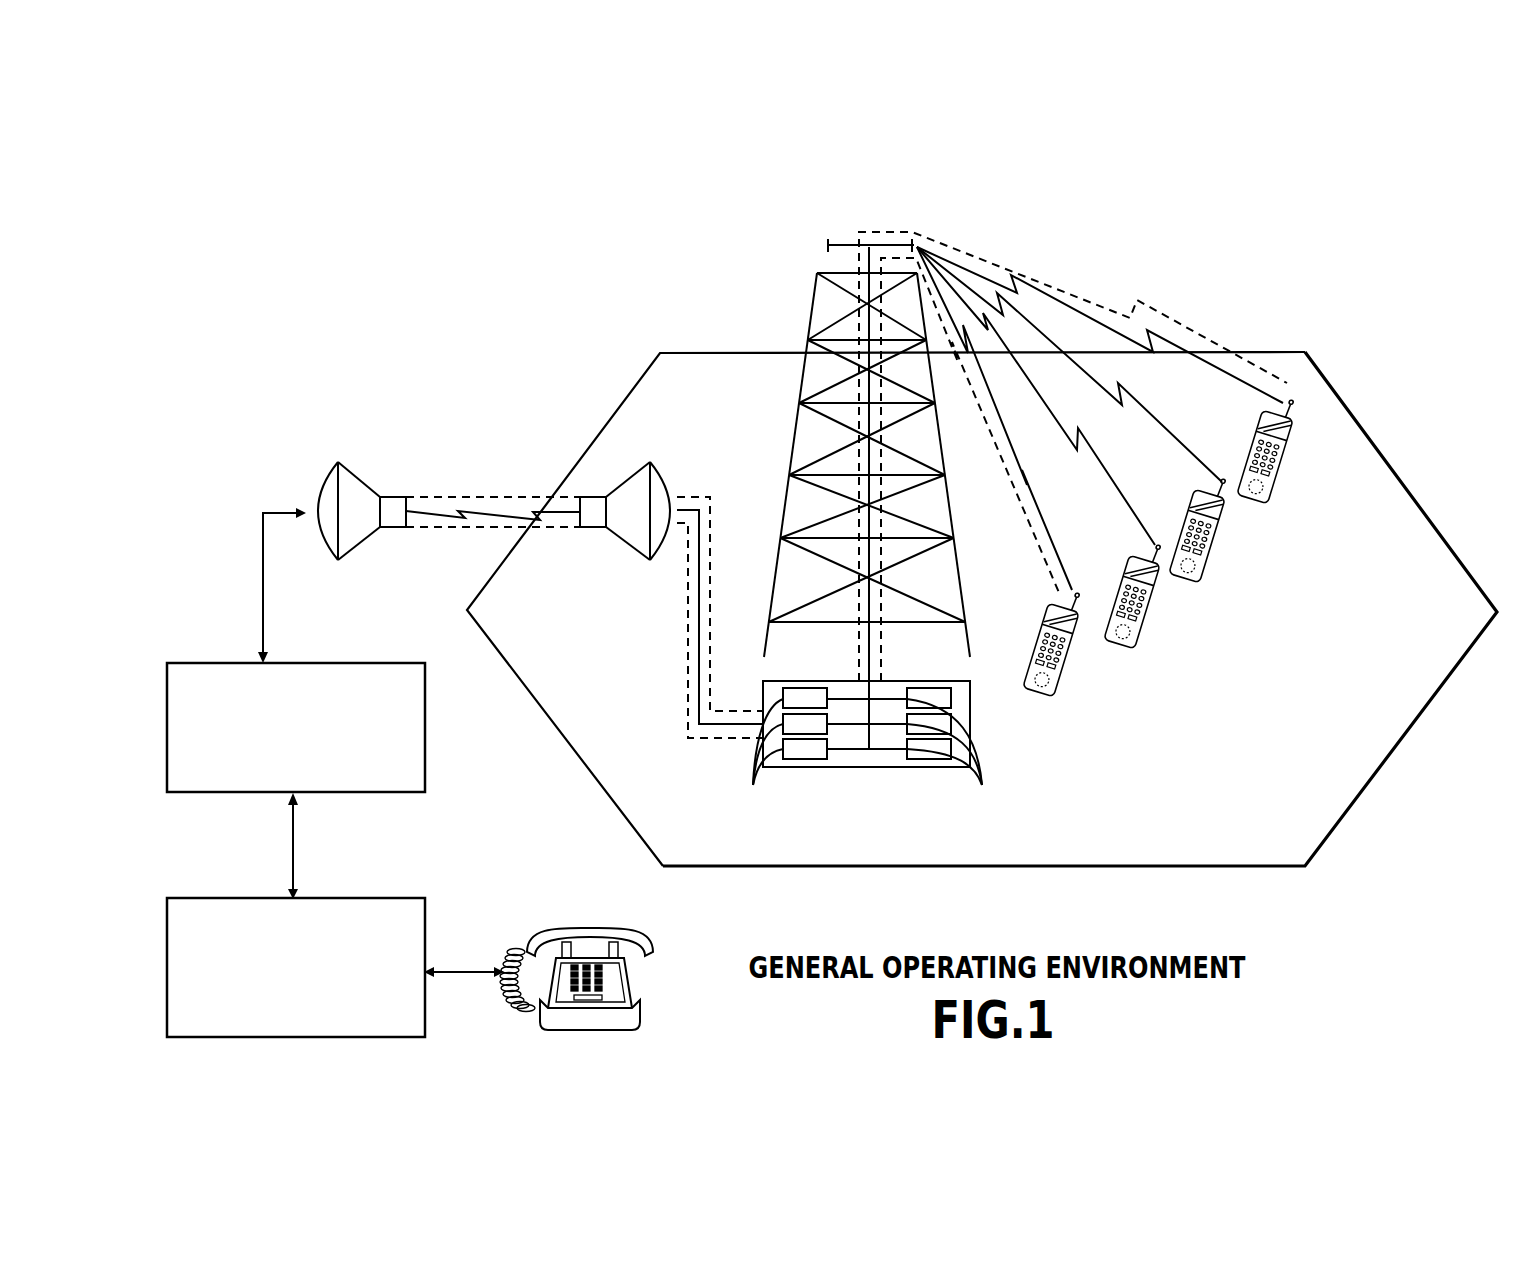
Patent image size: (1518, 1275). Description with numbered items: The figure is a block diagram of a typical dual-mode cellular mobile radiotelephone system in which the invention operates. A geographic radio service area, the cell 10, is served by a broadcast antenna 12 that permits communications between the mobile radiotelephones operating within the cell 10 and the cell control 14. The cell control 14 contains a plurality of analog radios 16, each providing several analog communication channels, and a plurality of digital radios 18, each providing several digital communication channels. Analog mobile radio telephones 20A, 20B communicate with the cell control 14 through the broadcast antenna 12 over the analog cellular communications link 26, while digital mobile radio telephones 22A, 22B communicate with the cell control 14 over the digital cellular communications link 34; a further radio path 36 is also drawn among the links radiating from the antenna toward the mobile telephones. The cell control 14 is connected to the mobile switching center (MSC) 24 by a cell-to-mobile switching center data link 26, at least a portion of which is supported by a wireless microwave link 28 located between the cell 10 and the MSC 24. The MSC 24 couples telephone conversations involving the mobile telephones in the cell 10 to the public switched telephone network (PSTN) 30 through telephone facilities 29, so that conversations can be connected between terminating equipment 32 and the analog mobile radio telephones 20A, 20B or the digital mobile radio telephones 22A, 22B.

The cell 10 is at (1267, 352).
The broadcast antenna 12 is at (846, 243).
The cell control 14 is at (903, 680).
The analog radio 16 is at (754, 756).
The digital radio 18 is at (957, 756).
The analog mobile radio telephone 20A is at (1070, 657).
The analog mobile radio telephone 20B is at (1157, 593).
The digital mobile radio telephone 22A is at (1218, 527).
The digital mobile radio telephone 22B is at (1282, 442).
The mobile switching center (MSC) 24 is at (367, 663).
The cell-to-mobile switching center data link 26 is at (260, 536).
The microwave link 28 is at (482, 512).
The telephone facilities 29 is at (293, 830).
The public switched telephone network (PSTN) 30 is at (363, 898).
The terminating equipment 32 is at (590, 925).
The digital cellular communications link 34 is at (1197, 357).
The radio channel 36 is at (1082, 455).